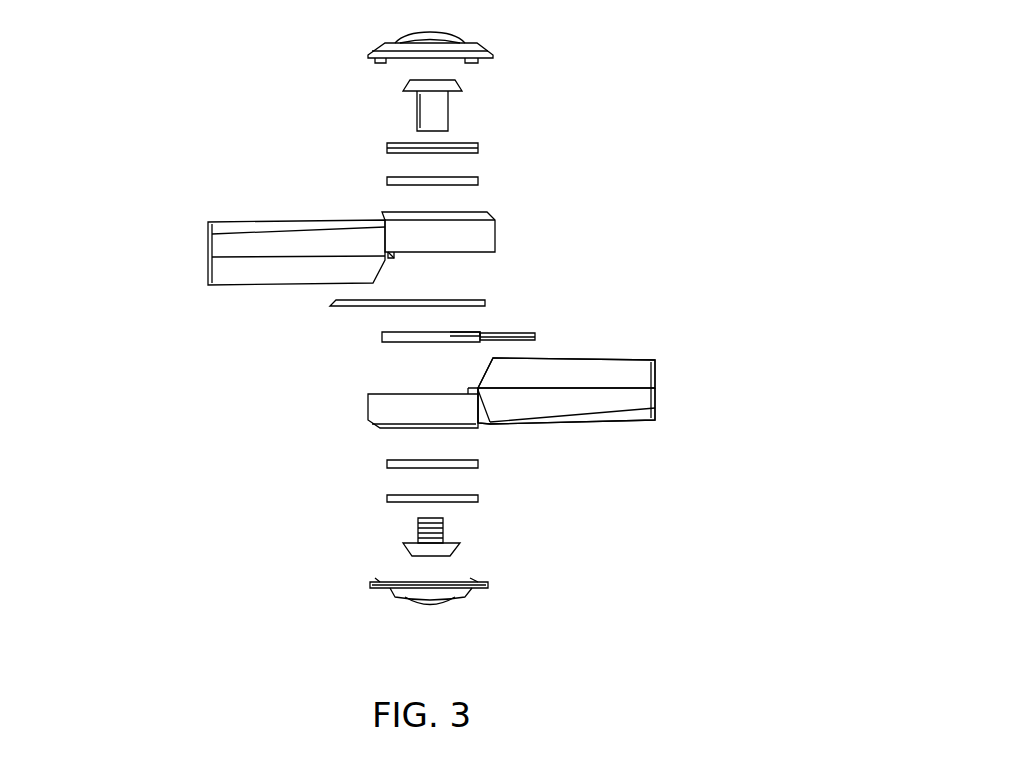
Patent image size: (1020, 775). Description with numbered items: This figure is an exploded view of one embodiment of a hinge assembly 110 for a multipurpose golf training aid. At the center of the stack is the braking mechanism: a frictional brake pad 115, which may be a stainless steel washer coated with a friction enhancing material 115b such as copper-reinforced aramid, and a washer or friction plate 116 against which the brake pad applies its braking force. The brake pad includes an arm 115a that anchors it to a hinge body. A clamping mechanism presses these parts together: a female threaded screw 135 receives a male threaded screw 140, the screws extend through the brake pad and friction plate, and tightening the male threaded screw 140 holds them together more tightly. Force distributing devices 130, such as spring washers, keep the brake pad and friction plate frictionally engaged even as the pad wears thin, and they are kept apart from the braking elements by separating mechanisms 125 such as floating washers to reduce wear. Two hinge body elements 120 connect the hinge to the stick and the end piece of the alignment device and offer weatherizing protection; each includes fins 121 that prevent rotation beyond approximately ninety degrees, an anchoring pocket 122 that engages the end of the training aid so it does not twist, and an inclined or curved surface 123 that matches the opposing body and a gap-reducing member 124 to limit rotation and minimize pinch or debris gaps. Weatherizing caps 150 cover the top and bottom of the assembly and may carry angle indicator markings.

The hinge assembly 110 is at (712, 192).
The frictional brake pad 115 is at (382, 338).
The arm 115a is at (520, 335).
The friction enhancing material 115b is at (455, 332).
The friction plate 116 is at (332, 305).
The hinge body elements 120 is at (656, 419).
The fins 121 is at (655, 375).
The anchoring apparatus or pocket 122 is at (207, 282).
The inclined or curved surface 123 is at (376, 273).
The gap-reducing member 124 is at (392, 256).
The separating mechanisms 125 is at (478, 177).
The force distributing devices 130 is at (387, 148).
The female threaded screw 135 is at (412, 81).
The male threaded screw 140 is at (417, 528).
The hinge body caps 150 is at (482, 43).